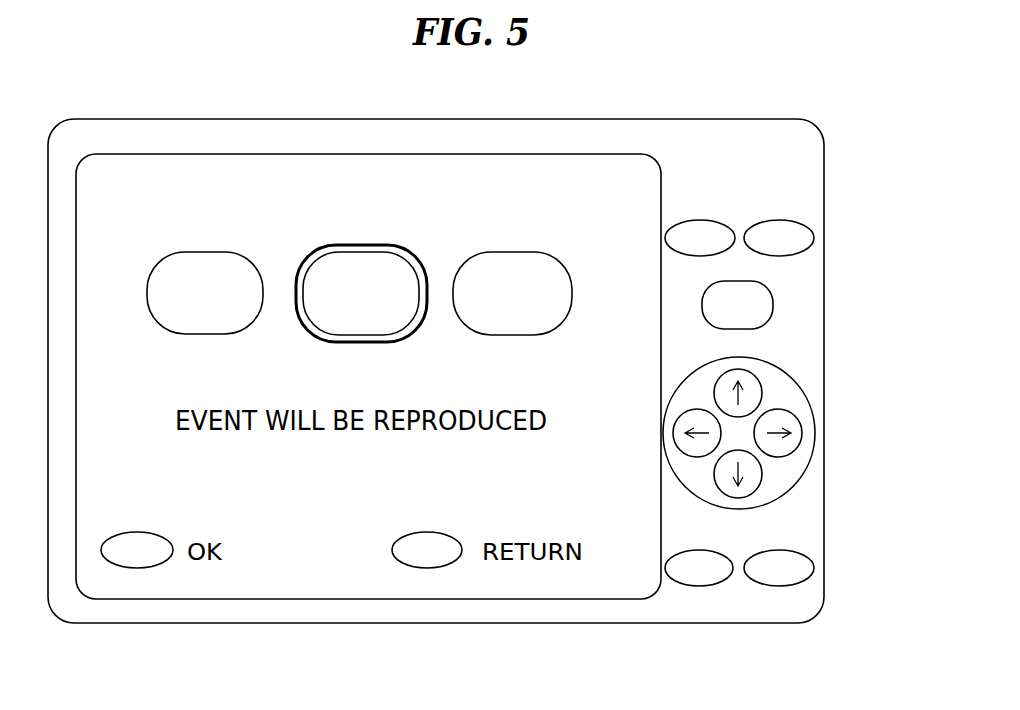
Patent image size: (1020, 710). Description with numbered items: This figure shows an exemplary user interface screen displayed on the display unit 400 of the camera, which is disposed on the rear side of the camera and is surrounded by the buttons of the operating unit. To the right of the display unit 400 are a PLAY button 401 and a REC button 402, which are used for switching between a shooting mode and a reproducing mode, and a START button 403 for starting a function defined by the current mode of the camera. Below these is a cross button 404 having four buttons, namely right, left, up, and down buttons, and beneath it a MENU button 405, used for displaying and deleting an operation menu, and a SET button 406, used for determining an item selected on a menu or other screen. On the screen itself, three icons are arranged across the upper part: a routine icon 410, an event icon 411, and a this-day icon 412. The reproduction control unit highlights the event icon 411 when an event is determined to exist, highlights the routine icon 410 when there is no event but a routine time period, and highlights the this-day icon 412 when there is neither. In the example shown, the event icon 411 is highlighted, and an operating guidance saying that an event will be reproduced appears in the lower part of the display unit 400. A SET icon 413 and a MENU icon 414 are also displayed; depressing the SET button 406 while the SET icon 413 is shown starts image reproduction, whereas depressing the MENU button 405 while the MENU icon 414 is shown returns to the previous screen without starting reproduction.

The display unit 400 is at (348, 153).
The PLAY button 401 is at (702, 220).
The REC button 402 is at (813, 236).
The START button 403 is at (773, 300).
The cross button 404 is at (815, 428).
The MENU button 405 is at (699, 587).
The SET button 406 is at (813, 564).
The routine icon 410 is at (197, 252).
The event icon 411 is at (360, 245).
The this-day icon 412 is at (508, 252).
The SET icon 413 is at (137, 568).
The MENU icon 414 is at (427, 568).